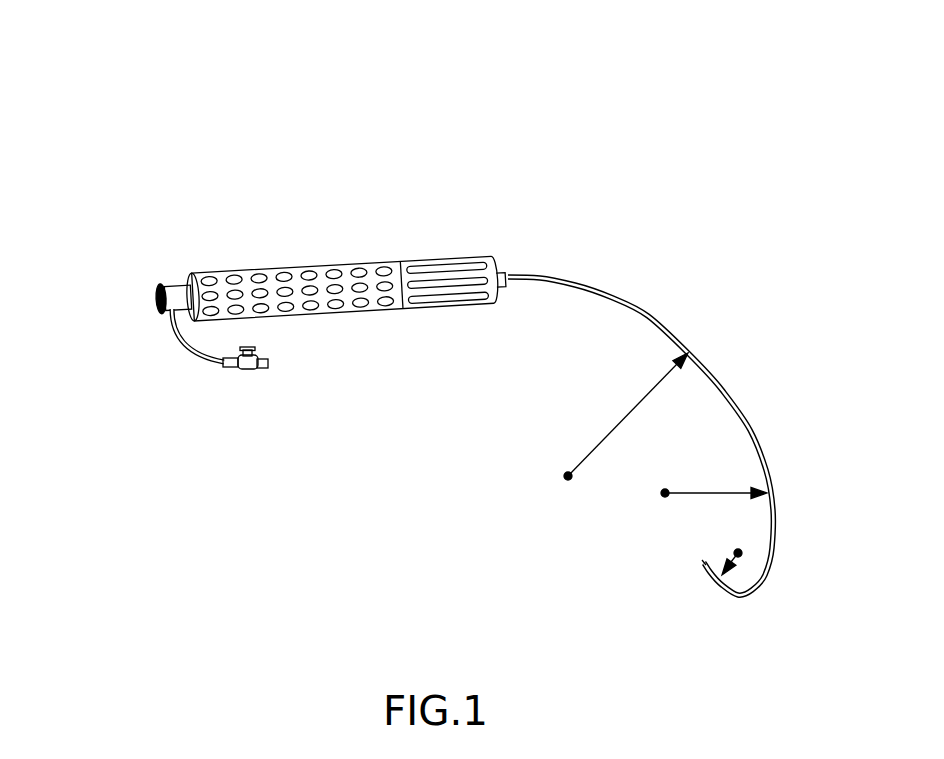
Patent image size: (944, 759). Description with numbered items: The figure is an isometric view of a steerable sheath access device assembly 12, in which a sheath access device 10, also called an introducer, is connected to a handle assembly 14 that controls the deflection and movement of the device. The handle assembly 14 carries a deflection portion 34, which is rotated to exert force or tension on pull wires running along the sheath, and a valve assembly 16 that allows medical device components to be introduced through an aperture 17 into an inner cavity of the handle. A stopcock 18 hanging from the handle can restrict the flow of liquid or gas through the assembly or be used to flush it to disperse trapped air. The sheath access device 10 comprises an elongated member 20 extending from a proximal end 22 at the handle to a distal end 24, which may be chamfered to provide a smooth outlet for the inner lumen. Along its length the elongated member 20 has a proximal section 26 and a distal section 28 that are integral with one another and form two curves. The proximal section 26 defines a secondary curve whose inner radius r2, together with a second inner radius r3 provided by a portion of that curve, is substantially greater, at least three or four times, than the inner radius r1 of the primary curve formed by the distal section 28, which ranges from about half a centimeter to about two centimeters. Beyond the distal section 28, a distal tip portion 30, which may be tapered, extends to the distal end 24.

The sheath access device 10 is at (787, 374).
The steerable sheath access device assembly 12 is at (366, 106).
The handle assembly 14 is at (239, 211).
The valve assembly 16 is at (141, 318).
The aperture 17 is at (157, 297).
The stopcock 18 is at (225, 393).
The elongated member 20 is at (632, 262).
The proximal end 22 is at (508, 267).
The distal end 24 is at (705, 570).
The proximal section 26 is at (668, 330).
The distal section 28 is at (757, 588).
The distal tip portion 30 is at (688, 570).
The deflection portion 34 is at (440, 262).
The inner radius of primary curve r1 is at (726, 549).
The inner radius of secondary curve r2 is at (626, 416).
The second inner radius of secondary curve r3 is at (714, 505).